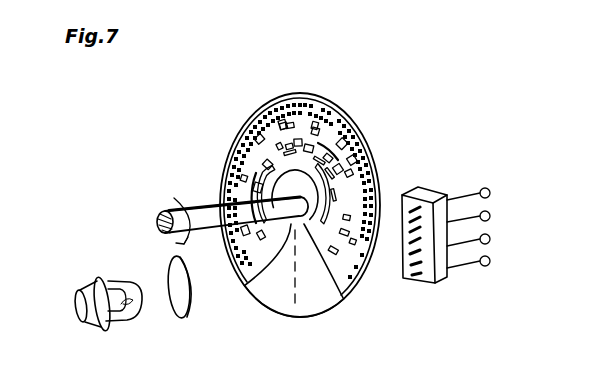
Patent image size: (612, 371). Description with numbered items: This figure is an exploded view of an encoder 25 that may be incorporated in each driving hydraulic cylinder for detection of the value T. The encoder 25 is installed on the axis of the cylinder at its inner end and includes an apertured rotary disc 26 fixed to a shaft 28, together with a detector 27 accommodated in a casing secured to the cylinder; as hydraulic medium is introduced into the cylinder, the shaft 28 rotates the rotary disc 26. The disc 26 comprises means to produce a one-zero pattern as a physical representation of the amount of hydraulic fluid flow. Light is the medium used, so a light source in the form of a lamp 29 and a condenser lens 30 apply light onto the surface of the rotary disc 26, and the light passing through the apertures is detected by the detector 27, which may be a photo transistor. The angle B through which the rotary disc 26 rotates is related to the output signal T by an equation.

The encoder 25 is at (366, 128).
The apertured rotary disc 26 is at (283, 105).
The detector 27 is at (407, 280).
The shaft 28 is at (172, 212).
The lamp 29 is at (130, 325).
The condenser lens 30 is at (191, 311).
The angle of rotation of the rotary disc B is at (181, 199).